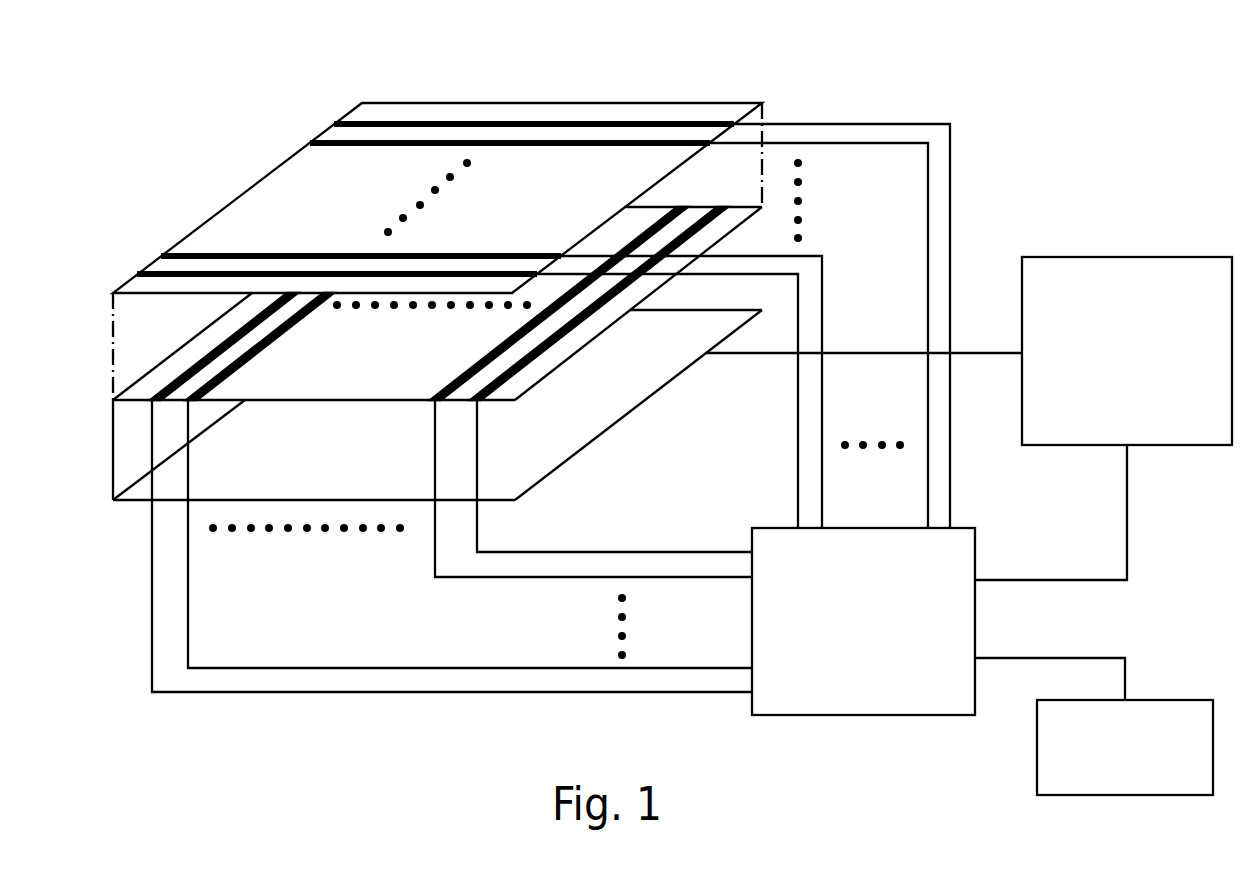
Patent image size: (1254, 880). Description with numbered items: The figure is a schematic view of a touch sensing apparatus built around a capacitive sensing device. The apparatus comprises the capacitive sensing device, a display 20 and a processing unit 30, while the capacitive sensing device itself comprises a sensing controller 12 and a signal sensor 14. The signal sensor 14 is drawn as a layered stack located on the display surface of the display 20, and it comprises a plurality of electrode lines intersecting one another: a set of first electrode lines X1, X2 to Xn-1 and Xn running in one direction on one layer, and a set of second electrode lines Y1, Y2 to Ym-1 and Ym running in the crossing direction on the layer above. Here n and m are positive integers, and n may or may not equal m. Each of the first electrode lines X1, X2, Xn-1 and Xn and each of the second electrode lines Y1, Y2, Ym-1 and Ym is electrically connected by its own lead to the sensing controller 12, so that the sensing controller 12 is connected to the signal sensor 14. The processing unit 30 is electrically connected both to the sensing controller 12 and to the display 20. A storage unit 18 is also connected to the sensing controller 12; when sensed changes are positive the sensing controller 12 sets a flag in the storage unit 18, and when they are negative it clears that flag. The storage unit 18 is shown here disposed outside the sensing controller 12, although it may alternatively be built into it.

The sensing controller 12 is at (880, 715).
The signal sensor 14 is at (97, 287).
The storage unit 18 is at (1120, 795).
The display 20 is at (133, 502).
The processing unit 30 is at (1117, 257).
The second electrode line Ym is at (472, 122).
The second electrode line Ym-1 is at (562, 140).
The second electrode line Y1 is at (270, 273).
The second electrode line Y2 is at (452, 253).
The first electrode line X1 is at (223, 345).
The first electrode line X2 is at (292, 317).
The first electrode line Xn-1 is at (472, 375).
The first electrode line Xn is at (538, 347).